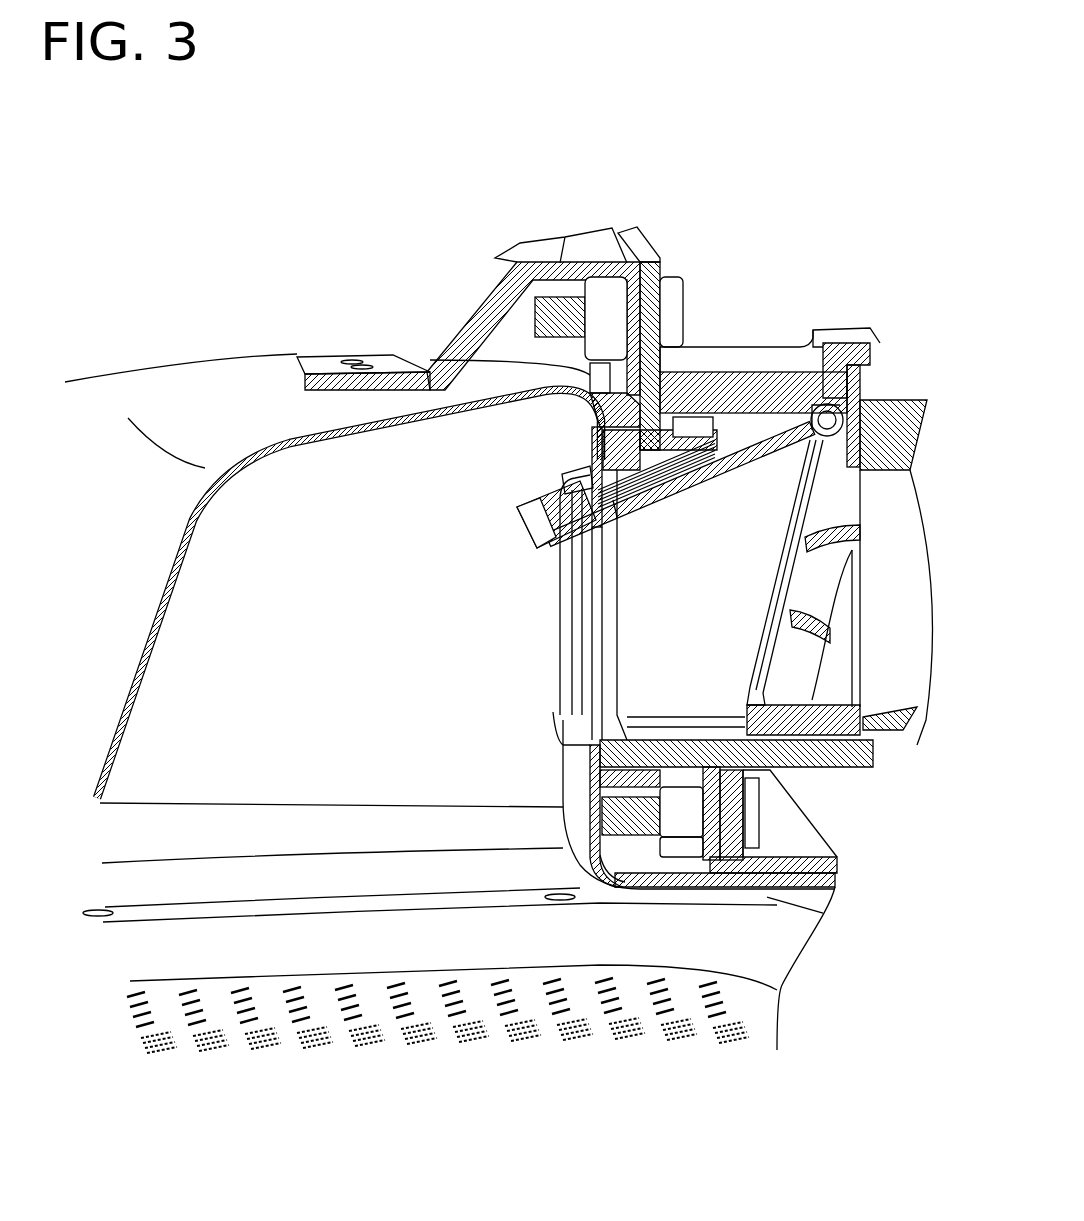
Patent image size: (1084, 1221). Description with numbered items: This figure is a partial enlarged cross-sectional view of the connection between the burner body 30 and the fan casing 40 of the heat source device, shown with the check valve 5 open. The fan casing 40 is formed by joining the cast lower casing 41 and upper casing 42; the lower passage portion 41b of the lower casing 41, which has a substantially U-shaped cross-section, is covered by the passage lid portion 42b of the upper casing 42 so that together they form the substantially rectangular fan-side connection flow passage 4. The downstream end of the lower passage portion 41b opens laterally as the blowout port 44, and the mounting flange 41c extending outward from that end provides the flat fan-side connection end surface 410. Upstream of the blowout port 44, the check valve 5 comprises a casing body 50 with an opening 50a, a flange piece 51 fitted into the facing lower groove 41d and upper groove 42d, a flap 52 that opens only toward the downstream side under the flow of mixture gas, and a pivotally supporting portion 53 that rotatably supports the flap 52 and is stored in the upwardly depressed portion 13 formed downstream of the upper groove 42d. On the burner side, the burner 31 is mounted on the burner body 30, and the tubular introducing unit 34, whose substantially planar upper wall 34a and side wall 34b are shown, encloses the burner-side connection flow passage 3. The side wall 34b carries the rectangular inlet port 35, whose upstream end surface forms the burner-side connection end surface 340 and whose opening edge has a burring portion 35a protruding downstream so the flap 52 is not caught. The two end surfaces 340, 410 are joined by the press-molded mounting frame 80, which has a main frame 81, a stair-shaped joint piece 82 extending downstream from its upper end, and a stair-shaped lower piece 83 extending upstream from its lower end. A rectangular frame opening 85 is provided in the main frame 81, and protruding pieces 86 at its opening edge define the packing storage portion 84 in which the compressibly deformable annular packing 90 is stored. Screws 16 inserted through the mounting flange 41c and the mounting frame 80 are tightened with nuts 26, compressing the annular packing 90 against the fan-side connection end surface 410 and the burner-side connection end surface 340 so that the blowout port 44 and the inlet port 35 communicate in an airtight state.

The burner-side connection flow passage 3 is at (319, 631).
The fan-side connection flow passage 4 is at (680, 606).
The check valve 5 is at (757, 598).
The depressed portion 13 is at (784, 370).
The screws 16 is at (677, 310).
The nuts 26 is at (600, 283).
The burner body 30 is at (175, 345).
The burner 31 is at (482, 998).
The introducing unit 34 is at (228, 412).
The upper wall 34a is at (340, 400).
The side wall 34b is at (583, 813).
The inlet port 35 is at (560, 715).
The burring portion 35a is at (540, 540).
The burner-side connection end surface 340 is at (625, 880).
The fan casing 40 is at (717, 627).
The lower casing 41 is at (895, 745).
The lower passage portion 41b is at (800, 775).
The mounting flange 41c is at (700, 348).
The lower groove 41d is at (890, 760).
The upper casing 42 is at (905, 400).
The passage lid portion 42b is at (735, 350).
The upper groove 42d is at (865, 343).
The blowout port 44 is at (620, 490).
The casing body 50 is at (802, 715).
The opening 50a is at (747, 688).
The flange piece 51 is at (862, 362).
The flap 52 is at (712, 478).
The pivotally supporting portion 53 is at (812, 445).
The mounting frame 80 is at (583, 555).
The main frame 81 is at (672, 285).
The joint piece 82 is at (483, 293).
The lower piece 83 is at (773, 897).
The packing storage portion 84 is at (560, 493).
The frame opening 85 is at (618, 510).
The protruding pieces 86 is at (530, 392).
The annular packing 90 is at (600, 600).
The fan-side connection end surface 410 is at (577, 418).